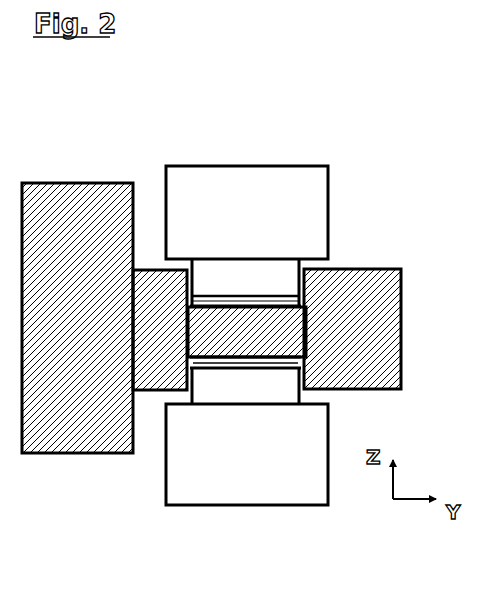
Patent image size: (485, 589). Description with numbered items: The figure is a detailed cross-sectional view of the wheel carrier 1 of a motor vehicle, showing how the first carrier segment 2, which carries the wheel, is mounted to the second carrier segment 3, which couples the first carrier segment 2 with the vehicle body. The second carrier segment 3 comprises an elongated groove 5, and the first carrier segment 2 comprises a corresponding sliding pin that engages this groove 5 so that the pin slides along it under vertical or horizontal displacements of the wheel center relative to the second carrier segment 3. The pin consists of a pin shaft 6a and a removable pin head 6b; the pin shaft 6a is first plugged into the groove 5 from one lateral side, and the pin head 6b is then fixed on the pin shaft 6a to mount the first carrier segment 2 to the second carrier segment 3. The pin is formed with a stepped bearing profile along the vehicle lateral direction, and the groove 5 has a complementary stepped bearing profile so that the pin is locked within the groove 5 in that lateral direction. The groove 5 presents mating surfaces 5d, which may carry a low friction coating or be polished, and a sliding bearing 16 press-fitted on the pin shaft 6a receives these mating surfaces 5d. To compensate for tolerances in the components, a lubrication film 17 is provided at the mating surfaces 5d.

The wheel carrier 1 is at (330, 90).
The first carrier segment 2 is at (88, 191).
The second carrier segment 3 is at (228, 167).
The groove 5 is at (271, 213).
The mating surfaces 5d is at (272, 368).
The pin shaft 6a is at (233, 343).
The pin head 6b is at (370, 269).
The sliding bearing 16 is at (246, 296).
The lubrication film 17 is at (303, 392).